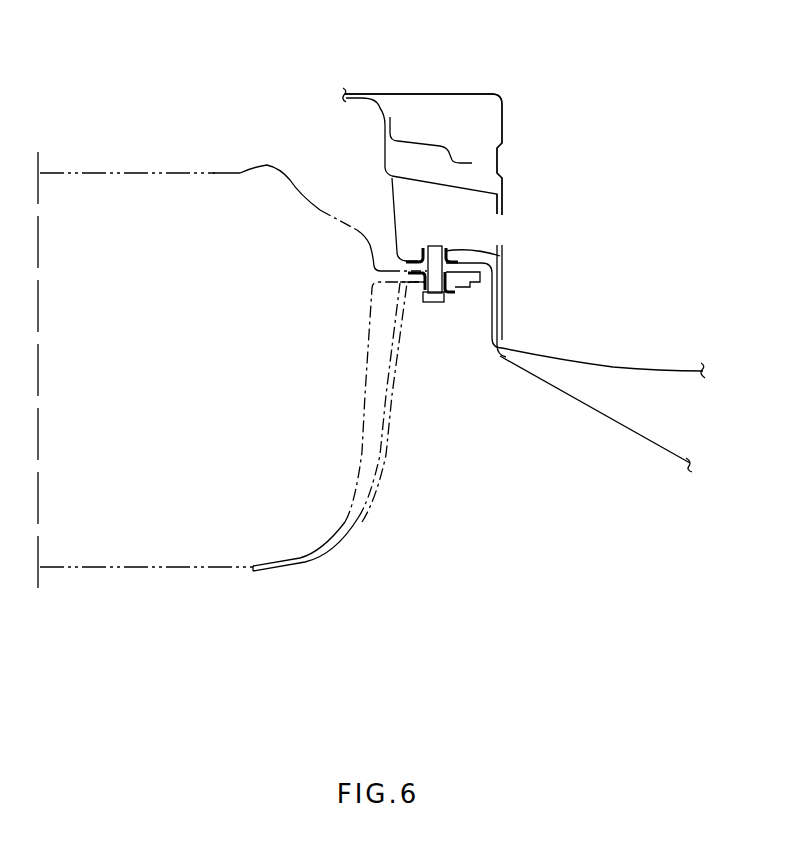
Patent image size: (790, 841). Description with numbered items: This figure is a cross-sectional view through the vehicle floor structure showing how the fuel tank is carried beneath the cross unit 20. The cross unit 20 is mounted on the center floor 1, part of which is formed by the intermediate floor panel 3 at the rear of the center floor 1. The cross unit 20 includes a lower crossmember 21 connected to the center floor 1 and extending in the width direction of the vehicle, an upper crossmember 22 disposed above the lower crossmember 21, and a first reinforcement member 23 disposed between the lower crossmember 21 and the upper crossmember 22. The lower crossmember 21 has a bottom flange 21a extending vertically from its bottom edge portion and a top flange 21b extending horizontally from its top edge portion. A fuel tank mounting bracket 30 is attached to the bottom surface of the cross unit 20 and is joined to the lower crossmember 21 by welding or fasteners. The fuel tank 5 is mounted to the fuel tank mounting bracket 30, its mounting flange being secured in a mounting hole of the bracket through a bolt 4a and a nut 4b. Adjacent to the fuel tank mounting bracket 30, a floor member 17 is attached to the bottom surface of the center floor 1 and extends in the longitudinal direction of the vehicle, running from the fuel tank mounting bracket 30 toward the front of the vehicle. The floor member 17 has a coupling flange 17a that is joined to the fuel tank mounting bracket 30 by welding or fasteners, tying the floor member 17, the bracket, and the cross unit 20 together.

The center floor 1 is at (670, 350).
The intermediate floor panel 3 is at (612, 366).
The bolt 4a is at (433, 303).
The nut 4b is at (500, 256).
The fuel tank 5 is at (163, 568).
The floor member 17 is at (603, 415).
The coupling flange 17a is at (492, 333).
The cross unit 20 is at (439, 62).
The lower crossmember 21 is at (440, 183).
The bottom flange 21a is at (497, 198).
The top flange 21b is at (363, 100).
The upper crossmember 22 is at (477, 93).
The first reinforcement member 23 is at (420, 140).
The fuel tank mounting bracket 30 is at (396, 227).